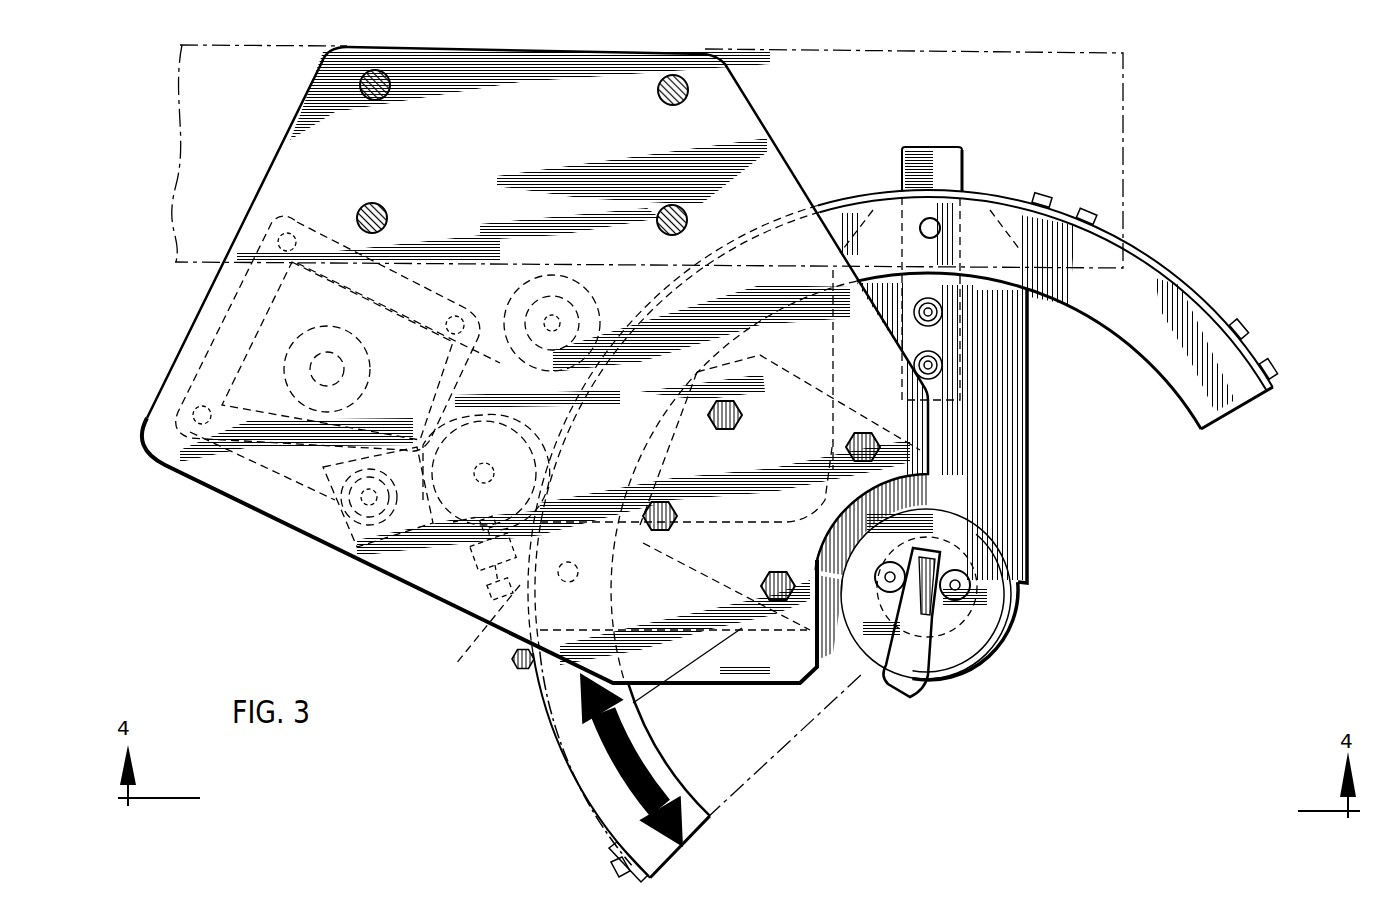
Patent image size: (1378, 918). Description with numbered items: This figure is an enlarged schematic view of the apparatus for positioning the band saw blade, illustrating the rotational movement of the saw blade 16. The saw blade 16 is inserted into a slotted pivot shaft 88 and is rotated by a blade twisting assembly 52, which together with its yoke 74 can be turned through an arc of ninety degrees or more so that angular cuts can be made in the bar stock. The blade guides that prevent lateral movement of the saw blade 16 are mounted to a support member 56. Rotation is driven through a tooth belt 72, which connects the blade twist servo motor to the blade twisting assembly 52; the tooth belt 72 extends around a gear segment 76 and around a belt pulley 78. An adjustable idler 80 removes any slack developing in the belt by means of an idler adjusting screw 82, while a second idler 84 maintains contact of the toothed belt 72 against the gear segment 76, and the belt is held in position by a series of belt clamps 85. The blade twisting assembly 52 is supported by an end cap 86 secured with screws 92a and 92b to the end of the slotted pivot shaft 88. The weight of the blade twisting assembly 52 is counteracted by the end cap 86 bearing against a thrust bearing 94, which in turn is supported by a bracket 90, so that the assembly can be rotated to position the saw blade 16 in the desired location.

The saw blade 16 is at (918, 690).
The blade twisting assembly 52 is at (1035, 445).
The support member 56 is at (640, 73).
The tooth belt 72 is at (773, 225).
The yoke 74 is at (911, 150).
The gear segment 76 is at (1163, 298).
The belt pulley 78 is at (312, 400).
The adjustable idler 80 is at (485, 543).
The idler adjusting screw 82 is at (510, 650).
The second idler 84 is at (572, 284).
The belt clamps 85 is at (1243, 365).
The end cap 86 is at (895, 562).
The slotted pivot shaft 88 is at (933, 665).
The bracket 90 is at (1040, 550).
The screw 92a is at (972, 592).
The screw 92b is at (882, 603).
The thrust bearing 94 is at (1014, 628).